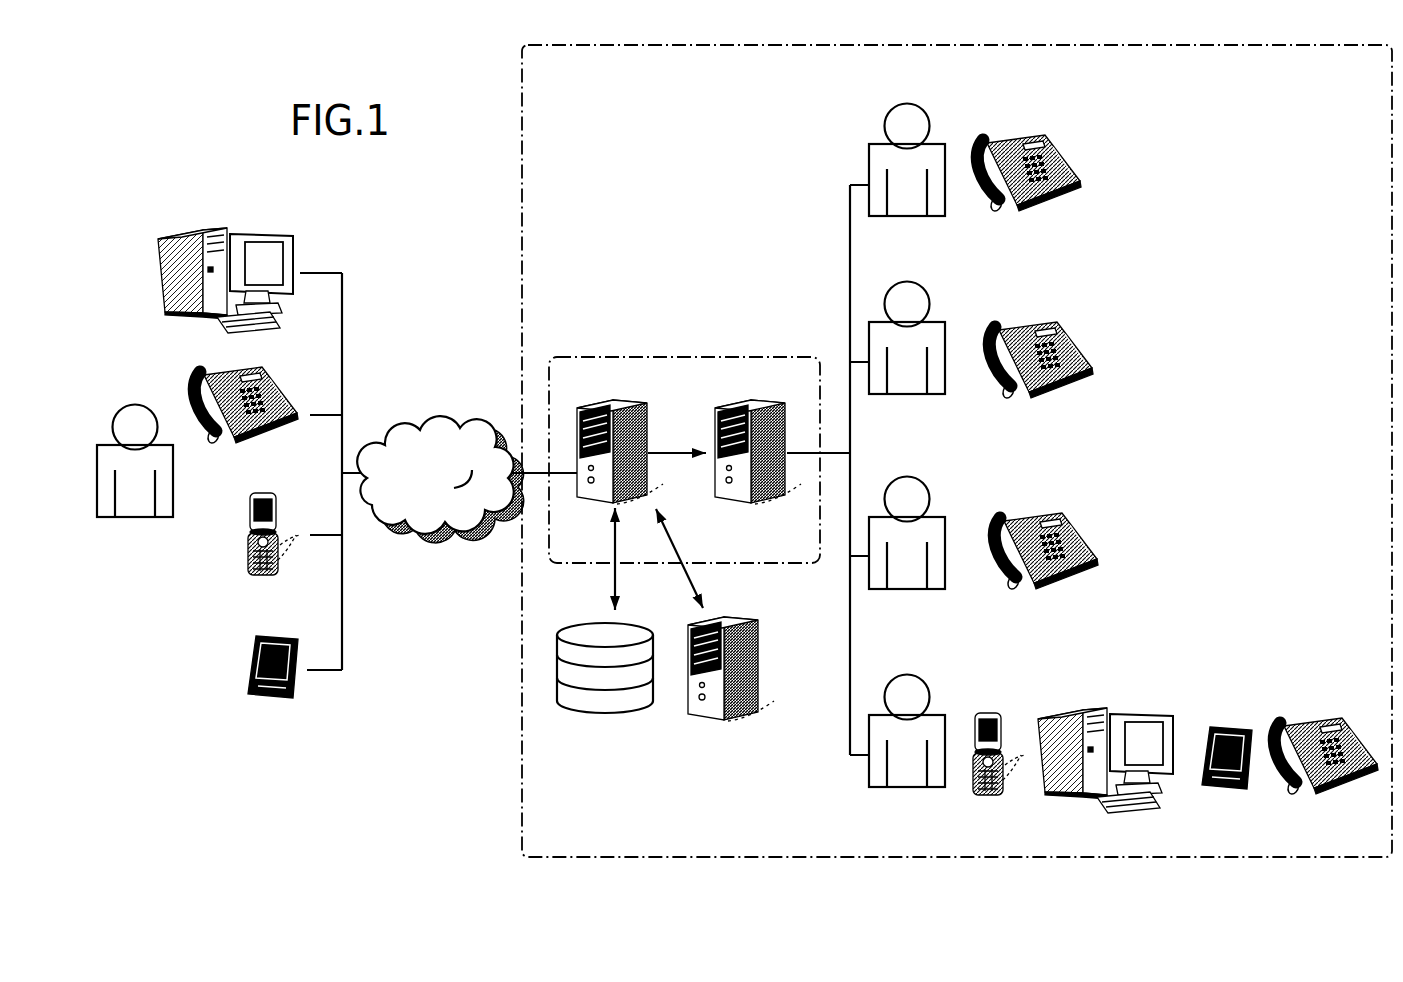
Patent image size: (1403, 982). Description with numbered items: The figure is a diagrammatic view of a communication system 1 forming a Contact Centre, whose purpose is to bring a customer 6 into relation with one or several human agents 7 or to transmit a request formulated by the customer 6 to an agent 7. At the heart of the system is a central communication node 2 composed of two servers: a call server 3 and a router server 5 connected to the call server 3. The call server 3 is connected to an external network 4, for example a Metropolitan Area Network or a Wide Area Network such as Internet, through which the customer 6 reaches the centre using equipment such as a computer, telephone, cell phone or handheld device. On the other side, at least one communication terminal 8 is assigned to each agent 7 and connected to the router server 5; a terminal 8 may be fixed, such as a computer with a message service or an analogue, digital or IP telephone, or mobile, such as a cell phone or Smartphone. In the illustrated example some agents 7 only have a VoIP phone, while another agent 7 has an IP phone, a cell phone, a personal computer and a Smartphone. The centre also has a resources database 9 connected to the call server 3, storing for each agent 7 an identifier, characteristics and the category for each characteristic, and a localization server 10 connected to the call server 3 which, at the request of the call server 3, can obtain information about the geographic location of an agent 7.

The communication system 1 is at (521, 797).
The central communication node 2 is at (690, 357).
The call server 3 is at (580, 392).
The external network 4 is at (436, 525).
The router server 5 is at (776, 392).
The customer 6 is at (134, 517).
The human agent 7 is at (947, 790).
The communication terminal 8 is at (1004, 708).
The resources database 9 is at (591, 713).
The localization server 10 is at (724, 720).